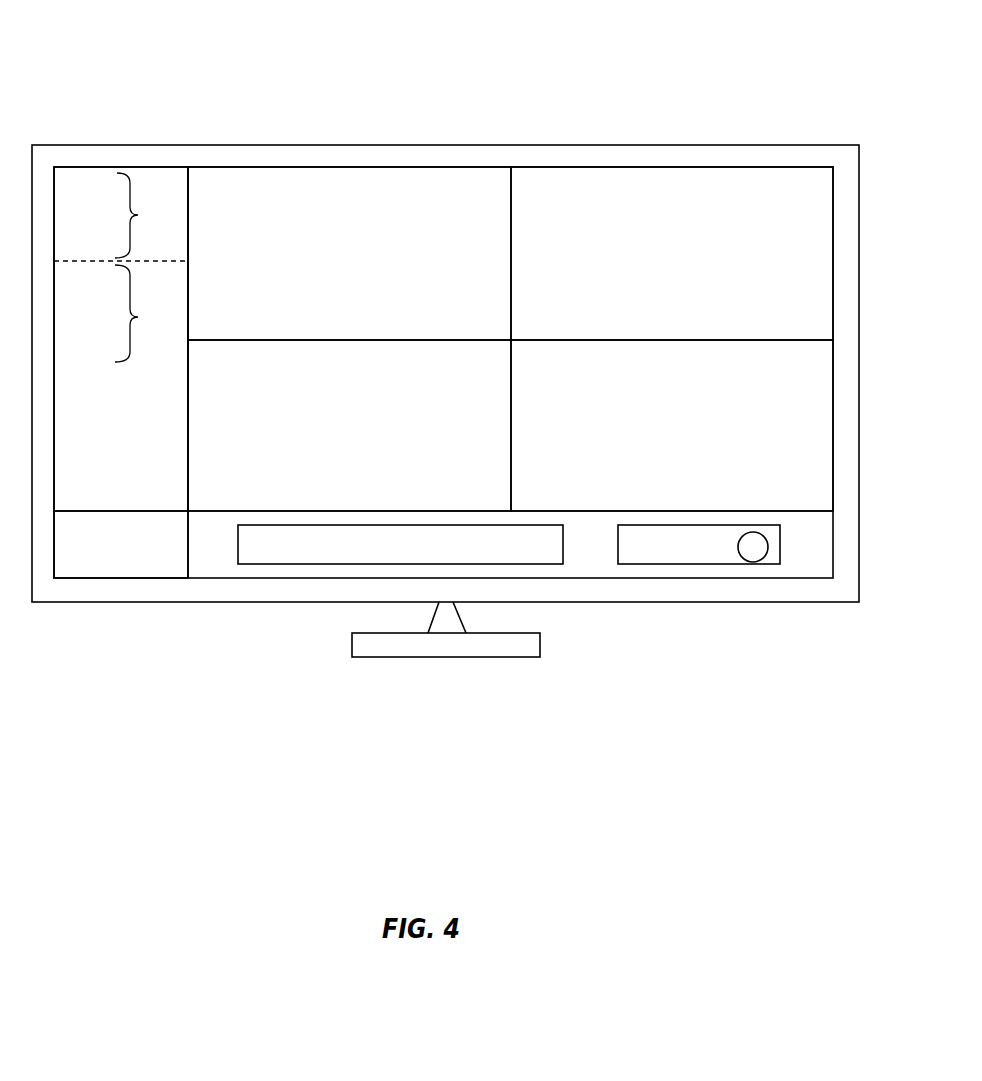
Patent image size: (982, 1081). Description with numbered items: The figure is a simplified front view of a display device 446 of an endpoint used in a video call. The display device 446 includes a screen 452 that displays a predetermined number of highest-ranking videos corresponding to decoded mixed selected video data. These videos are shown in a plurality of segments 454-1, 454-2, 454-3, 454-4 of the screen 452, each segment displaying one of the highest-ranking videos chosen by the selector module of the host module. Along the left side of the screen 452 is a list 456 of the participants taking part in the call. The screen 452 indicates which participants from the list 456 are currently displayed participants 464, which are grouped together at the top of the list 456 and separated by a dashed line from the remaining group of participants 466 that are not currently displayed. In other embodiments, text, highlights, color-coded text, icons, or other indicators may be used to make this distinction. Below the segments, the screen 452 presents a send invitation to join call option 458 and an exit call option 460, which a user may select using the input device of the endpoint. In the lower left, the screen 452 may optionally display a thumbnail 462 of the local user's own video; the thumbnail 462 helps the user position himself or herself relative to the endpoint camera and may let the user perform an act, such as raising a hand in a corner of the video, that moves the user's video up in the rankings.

The display device 446 is at (731, 92).
The screen 452 is at (250, 166).
The list 456 is at (93, 155).
The currently displayed participants 464 is at (124, 217).
The second group of contacts 466 is at (124, 316).
The segment 454-1 is at (376, 254).
The segment 454-2 is at (709, 254).
The segment 454-3 is at (376, 432).
The segment 454-4 is at (709, 432).
The thumbnail 462 is at (138, 553).
The send invitation to join call option 458 is at (280, 564).
The exit call option 460 is at (688, 564).